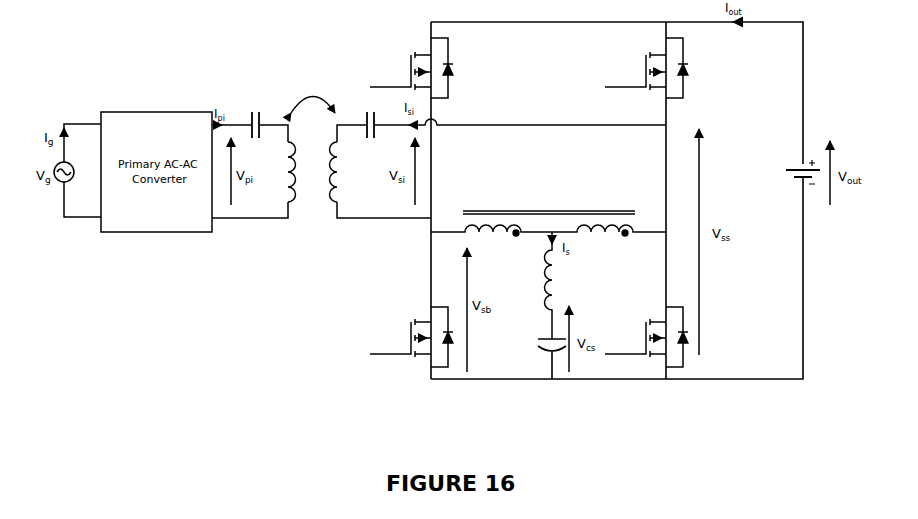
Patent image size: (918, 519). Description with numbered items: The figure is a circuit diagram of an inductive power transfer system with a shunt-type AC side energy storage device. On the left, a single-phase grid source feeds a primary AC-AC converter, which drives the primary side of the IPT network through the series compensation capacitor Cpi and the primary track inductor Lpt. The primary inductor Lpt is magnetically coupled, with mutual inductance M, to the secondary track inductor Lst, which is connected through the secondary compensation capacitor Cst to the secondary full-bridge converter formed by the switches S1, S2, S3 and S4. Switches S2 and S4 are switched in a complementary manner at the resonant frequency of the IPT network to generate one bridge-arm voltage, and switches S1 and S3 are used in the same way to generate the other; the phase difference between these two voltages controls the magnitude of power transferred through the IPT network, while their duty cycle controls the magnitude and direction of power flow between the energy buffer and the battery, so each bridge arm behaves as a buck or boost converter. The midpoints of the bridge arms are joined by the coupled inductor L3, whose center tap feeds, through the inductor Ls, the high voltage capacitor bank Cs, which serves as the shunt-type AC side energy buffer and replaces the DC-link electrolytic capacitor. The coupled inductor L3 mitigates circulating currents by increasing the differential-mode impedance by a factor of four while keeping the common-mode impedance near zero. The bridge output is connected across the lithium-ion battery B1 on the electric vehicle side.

The first switch of secondary full-bridge converter S1 is at (411, 68).
The second switch of secondary full-bridge converter S2 is at (646, 68).
The third switch of secondary full-bridge converter S3 is at (411, 337).
The fourth switch of secondary full-bridge converter S4 is at (646, 337).
The lithium-ion battery B1 is at (795, 169).
The coupled inductor L3 is at (548, 209).
The series inductor Ls is at (535, 285).
The high voltage capacitor bank Cs is at (542, 348).
The primary track inductor Lpt is at (281, 172).
The secondary track inductor Lst is at (343, 172).
The primary compensation capacitor Cpi is at (264, 118).
The secondary compensation capacitor Cst is at (359, 118).
The mutual inductance between primary and secondary M is at (313, 96).